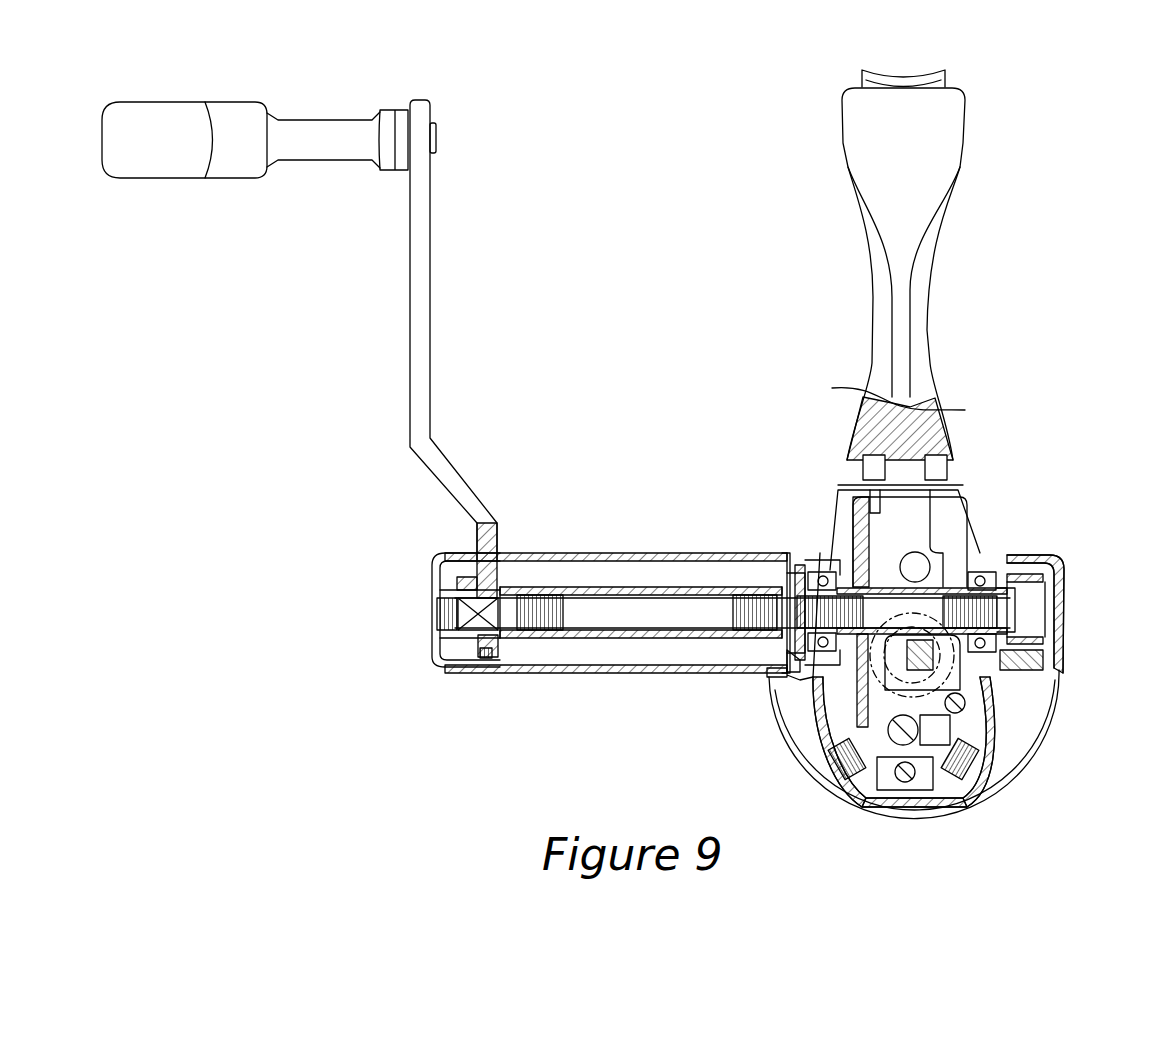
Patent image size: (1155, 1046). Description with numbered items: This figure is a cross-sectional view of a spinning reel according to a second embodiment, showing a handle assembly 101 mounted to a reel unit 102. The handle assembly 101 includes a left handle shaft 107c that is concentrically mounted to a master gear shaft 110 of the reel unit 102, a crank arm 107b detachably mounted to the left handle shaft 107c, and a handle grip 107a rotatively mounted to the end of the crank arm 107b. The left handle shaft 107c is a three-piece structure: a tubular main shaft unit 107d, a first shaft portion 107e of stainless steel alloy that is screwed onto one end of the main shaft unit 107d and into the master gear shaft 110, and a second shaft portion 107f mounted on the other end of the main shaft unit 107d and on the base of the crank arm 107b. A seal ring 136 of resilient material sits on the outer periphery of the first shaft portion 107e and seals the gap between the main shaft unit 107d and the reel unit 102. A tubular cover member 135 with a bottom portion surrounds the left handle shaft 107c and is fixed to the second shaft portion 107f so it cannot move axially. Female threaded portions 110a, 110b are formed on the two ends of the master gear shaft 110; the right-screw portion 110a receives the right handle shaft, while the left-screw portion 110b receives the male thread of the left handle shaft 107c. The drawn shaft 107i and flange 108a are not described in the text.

The handle assembly 101 is at (465, 330).
The reel unit 102 is at (832, 439).
The handle grip 107a is at (156, 163).
The crank arm 107b is at (420, 288).
The left handle shaft 107c is at (624, 576).
The tubular main shaft unit 107d is at (632, 637).
The first shaft portion 107e is at (766, 648).
The second shaft portion 107f is at (529, 656).
The handle shaft 107i is at (600, 607).
The flange 108a is at (785, 557).
The master gear shaft 110 is at (943, 587).
The female threaded portion 110a is at (1059, 664).
The female threaded portion 110b is at (850, 667).
The tubular cover member 135 is at (700, 553).
The seal ring 136 is at (782, 675).